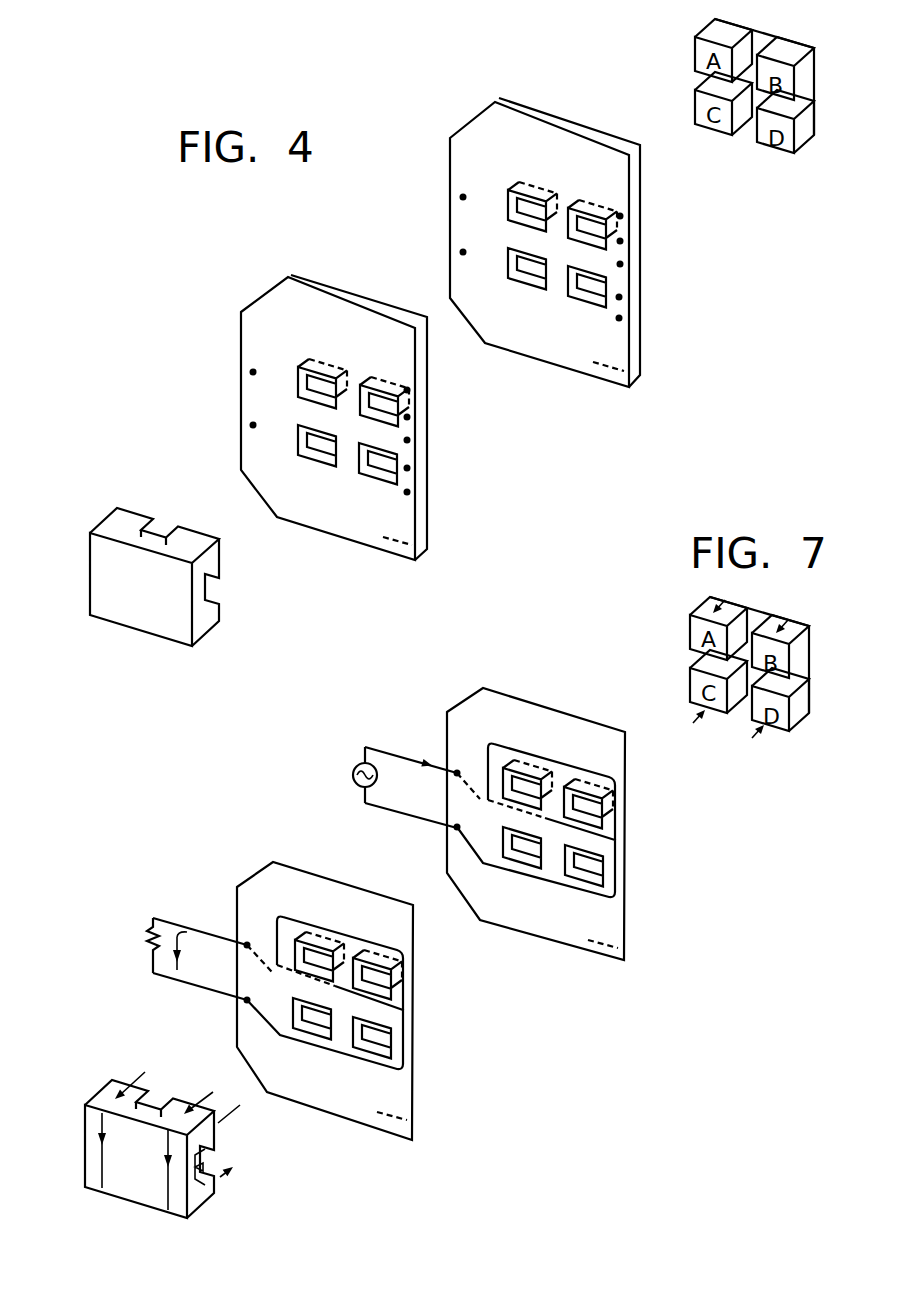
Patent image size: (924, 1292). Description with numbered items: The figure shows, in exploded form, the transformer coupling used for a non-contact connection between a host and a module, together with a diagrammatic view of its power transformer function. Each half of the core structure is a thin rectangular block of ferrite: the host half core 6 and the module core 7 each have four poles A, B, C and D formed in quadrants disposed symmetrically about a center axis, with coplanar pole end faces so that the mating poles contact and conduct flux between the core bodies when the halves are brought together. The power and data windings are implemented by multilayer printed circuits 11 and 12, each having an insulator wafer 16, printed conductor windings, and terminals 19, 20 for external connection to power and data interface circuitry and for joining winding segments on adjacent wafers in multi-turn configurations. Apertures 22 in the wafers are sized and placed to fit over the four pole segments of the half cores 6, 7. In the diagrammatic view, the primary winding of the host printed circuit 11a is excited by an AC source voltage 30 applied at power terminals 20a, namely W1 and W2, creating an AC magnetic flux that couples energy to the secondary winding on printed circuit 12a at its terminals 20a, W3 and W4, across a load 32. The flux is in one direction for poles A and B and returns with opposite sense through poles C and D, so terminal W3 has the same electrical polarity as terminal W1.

In FIG. 4, the transformer half core 6 is at (817, 55).
In FIG. 7, the transformer half core 6 is at (815, 635).
In FIG. 4, the module core 7 is at (88, 570).
In FIG. 7, the module core 7 is at (83, 1148).
In FIG. 4, the multilayer printed circuit 11 is at (451, 128).
In FIG. 4, the multilayer printed circuit 12 is at (240, 303).
In FIG. 4, the insulator wafer 16 is at (638, 192).
In FIG. 4, the terminals 19 is at (620, 216).
In FIG. 4, the terminals 20 is at (463, 197).
In FIG. 4, the apertures 22 is at (309, 358).
In FIG. 7, the host printed circuit 11a is at (510, 696).
In FIG. 7, the printed circuit 12a is at (300, 868).
In FIG. 7, the power terminals 20a is at (450, 762).
In FIG. 7, the AC source voltage 30 is at (355, 766).
In FIG. 7, the load resistor 32 is at (147, 934).
In FIG. 7, the power terminal w1 W1 is at (411, 752).
In FIG. 7, the power terminal w2 W2 is at (411, 808).
In FIG. 7, the power terminal w3 W3 is at (200, 925).
In FIG. 7, the power terminal w4 W4 is at (200, 966).